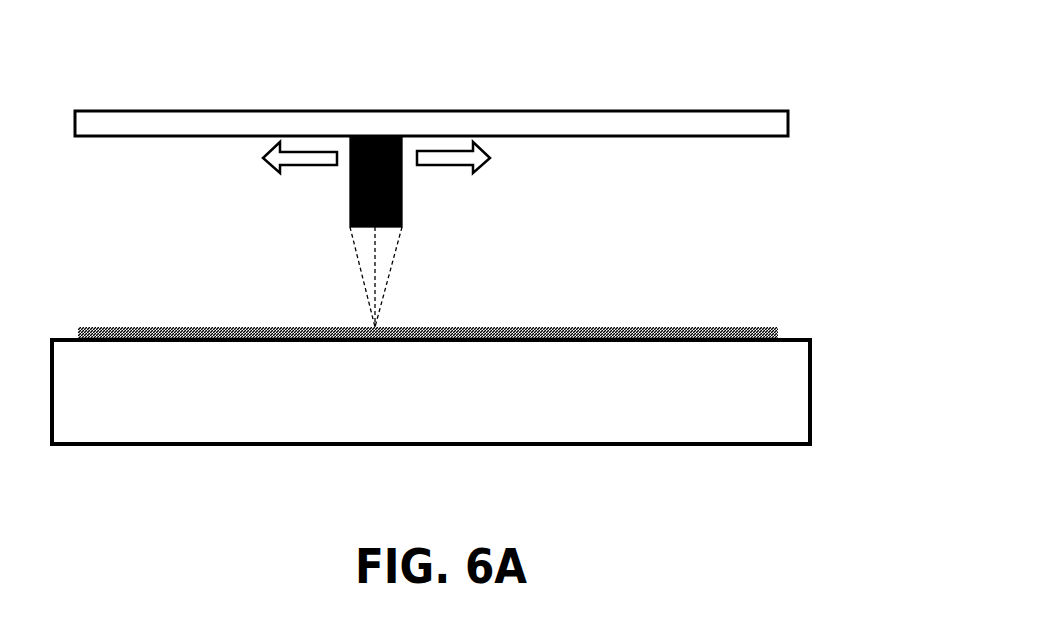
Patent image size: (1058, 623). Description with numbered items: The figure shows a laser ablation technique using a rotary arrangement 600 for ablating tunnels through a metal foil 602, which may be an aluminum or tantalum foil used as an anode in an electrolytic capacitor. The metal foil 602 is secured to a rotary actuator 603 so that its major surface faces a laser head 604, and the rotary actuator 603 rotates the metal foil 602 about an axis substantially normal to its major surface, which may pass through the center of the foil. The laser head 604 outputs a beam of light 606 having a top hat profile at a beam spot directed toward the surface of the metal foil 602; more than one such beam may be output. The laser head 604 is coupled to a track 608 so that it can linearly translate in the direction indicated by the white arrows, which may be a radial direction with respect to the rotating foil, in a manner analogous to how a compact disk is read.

The rotary arrangement 600 is at (68, 31).
The metal foil 602 is at (778, 332).
The rotary actuator 603 is at (812, 395).
The laser head 604 is at (402, 207).
The beam of light 606 is at (390, 273).
The track 608 is at (788, 122).